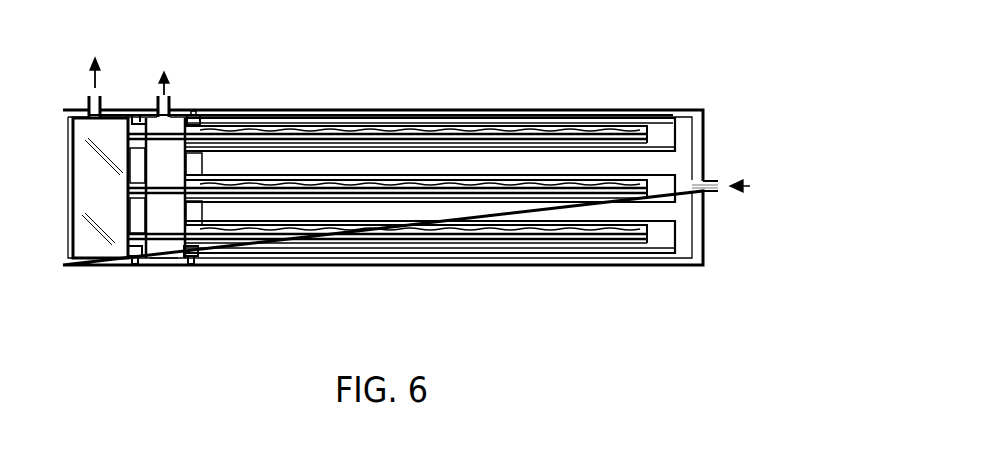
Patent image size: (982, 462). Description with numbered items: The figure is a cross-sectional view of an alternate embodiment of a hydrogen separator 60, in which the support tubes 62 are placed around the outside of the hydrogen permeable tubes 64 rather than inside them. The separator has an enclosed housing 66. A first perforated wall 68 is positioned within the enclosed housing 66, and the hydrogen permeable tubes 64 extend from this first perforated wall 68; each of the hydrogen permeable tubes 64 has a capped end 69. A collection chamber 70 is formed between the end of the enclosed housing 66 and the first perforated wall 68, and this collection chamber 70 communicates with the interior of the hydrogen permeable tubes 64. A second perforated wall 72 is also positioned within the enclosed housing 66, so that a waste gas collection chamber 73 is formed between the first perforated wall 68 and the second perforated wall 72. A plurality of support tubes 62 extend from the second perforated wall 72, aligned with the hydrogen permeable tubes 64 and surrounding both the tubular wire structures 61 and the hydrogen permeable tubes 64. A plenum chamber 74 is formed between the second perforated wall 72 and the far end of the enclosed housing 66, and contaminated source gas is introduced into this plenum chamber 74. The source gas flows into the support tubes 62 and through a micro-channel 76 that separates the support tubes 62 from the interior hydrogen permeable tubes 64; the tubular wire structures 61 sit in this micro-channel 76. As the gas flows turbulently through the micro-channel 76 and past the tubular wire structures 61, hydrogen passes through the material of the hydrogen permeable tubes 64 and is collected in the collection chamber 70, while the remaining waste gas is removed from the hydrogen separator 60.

The hydrogen separator 60 is at (383, 88).
The tubular wire structures 61 is at (577, 130).
The support tubes 62 is at (612, 250).
The hydrogen permeable tubes 64 is at (548, 247).
The enclosed housing 66 is at (488, 110).
The first perforated wall 68 is at (122, 258).
The capped ends 69 is at (648, 125).
The collection chamber 70 is at (88, 202).
The second perforated wall 72 is at (188, 262).
The waste gas collection chamber 73 is at (165, 248).
The plenum chamber 74 is at (408, 249).
The micro-channel 76 is at (497, 250).